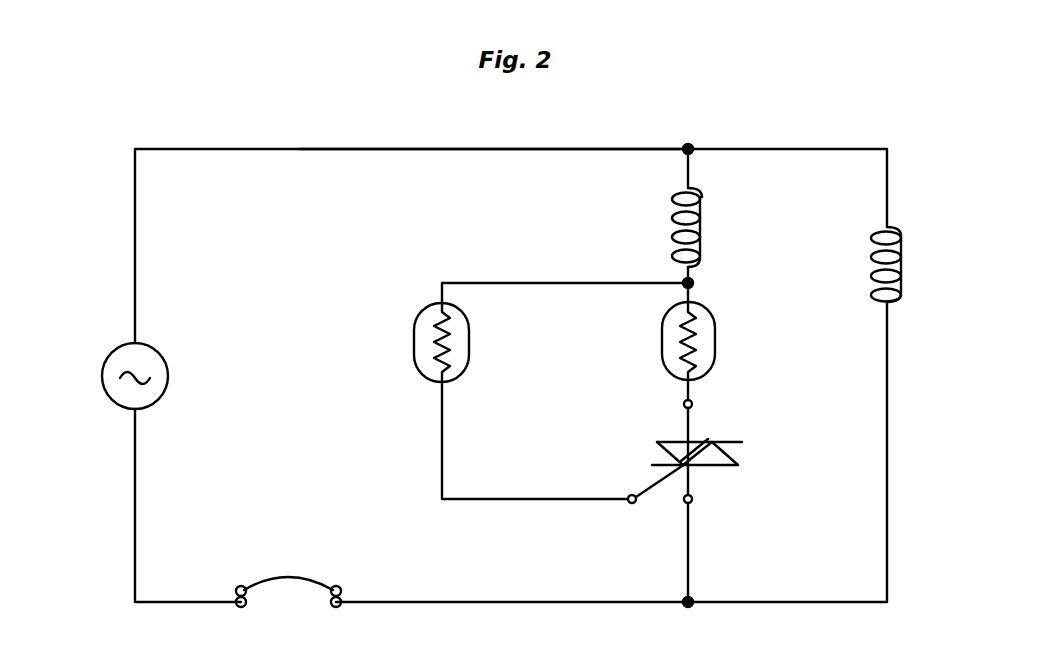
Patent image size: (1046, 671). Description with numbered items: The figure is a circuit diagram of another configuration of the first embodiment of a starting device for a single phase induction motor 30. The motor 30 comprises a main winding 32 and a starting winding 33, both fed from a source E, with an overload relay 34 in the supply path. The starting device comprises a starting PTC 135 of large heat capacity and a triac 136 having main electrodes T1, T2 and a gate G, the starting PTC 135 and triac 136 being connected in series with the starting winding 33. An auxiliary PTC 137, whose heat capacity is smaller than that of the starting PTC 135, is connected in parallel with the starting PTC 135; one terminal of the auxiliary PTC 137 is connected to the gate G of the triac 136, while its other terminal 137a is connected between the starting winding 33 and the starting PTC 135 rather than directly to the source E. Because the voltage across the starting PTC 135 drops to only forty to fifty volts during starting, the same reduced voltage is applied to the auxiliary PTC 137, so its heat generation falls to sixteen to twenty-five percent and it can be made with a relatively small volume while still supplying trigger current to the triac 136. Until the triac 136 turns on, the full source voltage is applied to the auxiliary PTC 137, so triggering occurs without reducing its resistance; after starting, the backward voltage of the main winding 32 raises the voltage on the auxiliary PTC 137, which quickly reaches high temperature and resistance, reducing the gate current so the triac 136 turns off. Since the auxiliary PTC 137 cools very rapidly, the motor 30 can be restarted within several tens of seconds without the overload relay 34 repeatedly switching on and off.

The single phase induction motor 30 is at (782, 150).
The main winding 32 is at (872, 240).
The starting winding 33 is at (700, 228).
The overload relay 34 is at (266, 577).
The starting PTC 135 is at (716, 340).
The triac 136 is at (742, 442).
The auxiliary PTC 137 is at (413, 340).
The terminal 137a is at (440, 295).
The source E is at (115, 352).
The gate G is at (628, 496).
The main electrode T1 is at (693, 499).
The main electrode T2 is at (683, 404).